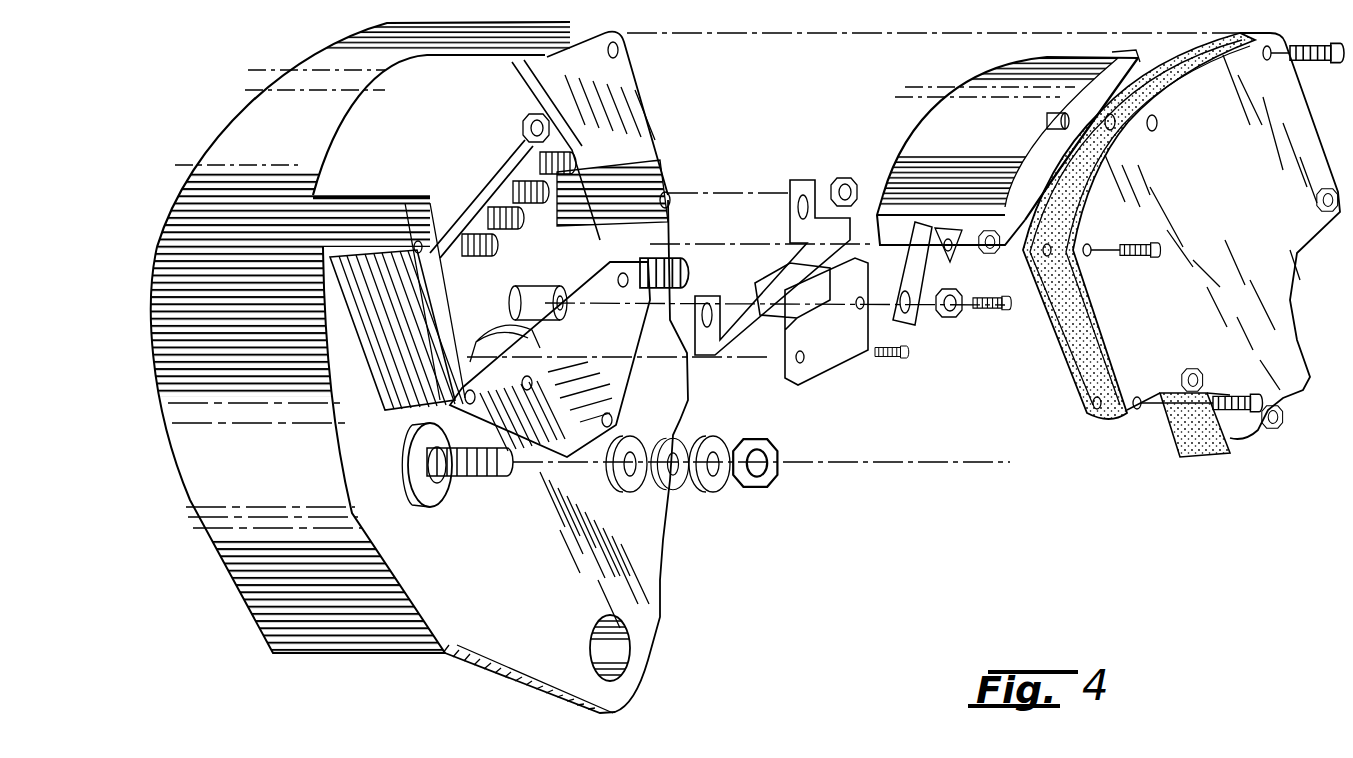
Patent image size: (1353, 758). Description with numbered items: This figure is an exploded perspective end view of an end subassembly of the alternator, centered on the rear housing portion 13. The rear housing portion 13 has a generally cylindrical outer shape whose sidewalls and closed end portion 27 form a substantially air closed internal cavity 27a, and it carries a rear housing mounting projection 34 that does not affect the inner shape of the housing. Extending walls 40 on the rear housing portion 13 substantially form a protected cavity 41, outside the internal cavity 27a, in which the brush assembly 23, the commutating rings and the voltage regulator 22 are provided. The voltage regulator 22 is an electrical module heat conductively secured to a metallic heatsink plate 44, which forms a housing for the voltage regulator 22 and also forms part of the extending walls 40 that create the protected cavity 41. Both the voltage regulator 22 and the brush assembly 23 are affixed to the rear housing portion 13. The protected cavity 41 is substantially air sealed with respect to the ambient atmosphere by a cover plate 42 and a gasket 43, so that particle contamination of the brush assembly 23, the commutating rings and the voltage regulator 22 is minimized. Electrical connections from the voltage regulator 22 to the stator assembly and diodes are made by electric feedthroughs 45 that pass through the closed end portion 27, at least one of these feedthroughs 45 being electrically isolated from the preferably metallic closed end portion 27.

The rear housing portion 13 is at (200, 490).
The voltage regulator 22 is at (1020, 240).
The brush assembly 23 is at (775, 352).
The closed end portion 27 is at (348, 142).
The internal cavity 27a is at (212, 112).
The rear housing mounting projection 34 is at (650, 577).
The extending walls 40 is at (385, 198).
The protected cavity 41 is at (630, 158).
The cover plate 42 is at (1240, 440).
The gasket 43 is at (1082, 370).
The heatsink plate 44 is at (932, 125).
The electric feedthroughs 45 is at (512, 158).